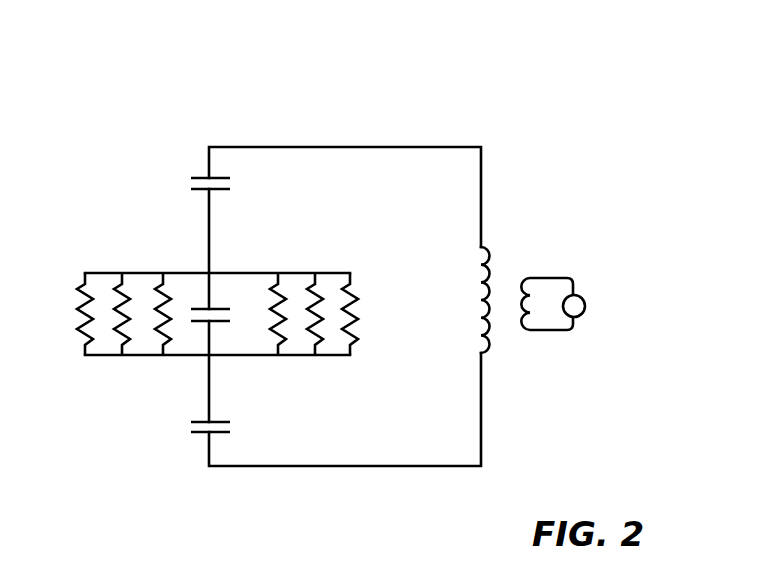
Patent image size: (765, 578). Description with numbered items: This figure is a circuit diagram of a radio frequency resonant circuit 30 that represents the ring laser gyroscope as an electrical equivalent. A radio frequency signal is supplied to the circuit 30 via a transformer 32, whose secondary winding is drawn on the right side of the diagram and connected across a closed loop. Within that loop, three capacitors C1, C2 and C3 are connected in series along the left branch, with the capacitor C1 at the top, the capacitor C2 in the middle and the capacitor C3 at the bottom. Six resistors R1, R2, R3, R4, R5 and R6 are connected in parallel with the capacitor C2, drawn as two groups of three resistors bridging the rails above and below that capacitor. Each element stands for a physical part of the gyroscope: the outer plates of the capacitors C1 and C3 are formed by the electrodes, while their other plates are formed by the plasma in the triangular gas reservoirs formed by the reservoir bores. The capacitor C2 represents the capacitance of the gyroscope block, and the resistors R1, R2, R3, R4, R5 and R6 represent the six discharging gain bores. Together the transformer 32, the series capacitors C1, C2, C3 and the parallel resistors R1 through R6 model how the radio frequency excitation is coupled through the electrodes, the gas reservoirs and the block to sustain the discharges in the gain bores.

The radio frequency resonant circuit 30 is at (584, 85).
The transformer 32 is at (530, 377).
The capacitor C1 is at (191, 180).
The capacitor C2 is at (202, 300).
The capacitor C3 is at (189, 430).
The resistor R1 is at (70, 314).
The resistor R2 is at (112, 314).
The resistor R3 is at (149, 314).
The resistor R4 is at (265, 314).
The resistor R5 is at (304, 314).
The resistor R6 is at (337, 314).